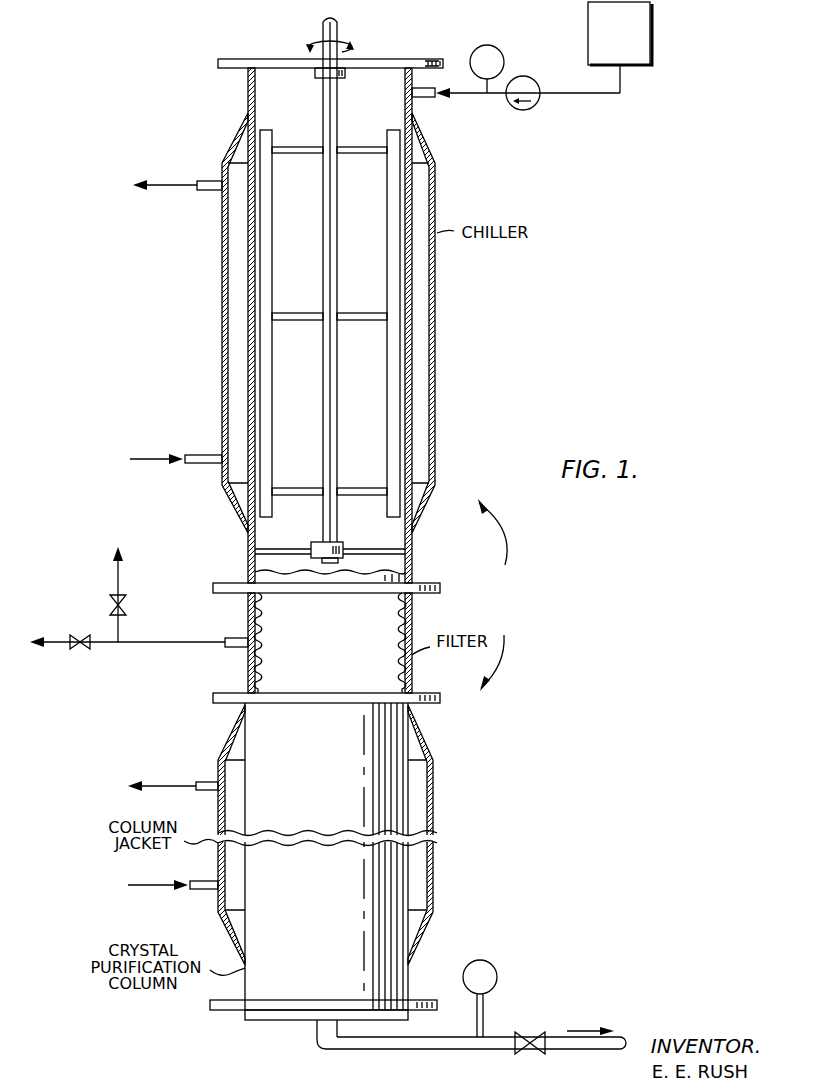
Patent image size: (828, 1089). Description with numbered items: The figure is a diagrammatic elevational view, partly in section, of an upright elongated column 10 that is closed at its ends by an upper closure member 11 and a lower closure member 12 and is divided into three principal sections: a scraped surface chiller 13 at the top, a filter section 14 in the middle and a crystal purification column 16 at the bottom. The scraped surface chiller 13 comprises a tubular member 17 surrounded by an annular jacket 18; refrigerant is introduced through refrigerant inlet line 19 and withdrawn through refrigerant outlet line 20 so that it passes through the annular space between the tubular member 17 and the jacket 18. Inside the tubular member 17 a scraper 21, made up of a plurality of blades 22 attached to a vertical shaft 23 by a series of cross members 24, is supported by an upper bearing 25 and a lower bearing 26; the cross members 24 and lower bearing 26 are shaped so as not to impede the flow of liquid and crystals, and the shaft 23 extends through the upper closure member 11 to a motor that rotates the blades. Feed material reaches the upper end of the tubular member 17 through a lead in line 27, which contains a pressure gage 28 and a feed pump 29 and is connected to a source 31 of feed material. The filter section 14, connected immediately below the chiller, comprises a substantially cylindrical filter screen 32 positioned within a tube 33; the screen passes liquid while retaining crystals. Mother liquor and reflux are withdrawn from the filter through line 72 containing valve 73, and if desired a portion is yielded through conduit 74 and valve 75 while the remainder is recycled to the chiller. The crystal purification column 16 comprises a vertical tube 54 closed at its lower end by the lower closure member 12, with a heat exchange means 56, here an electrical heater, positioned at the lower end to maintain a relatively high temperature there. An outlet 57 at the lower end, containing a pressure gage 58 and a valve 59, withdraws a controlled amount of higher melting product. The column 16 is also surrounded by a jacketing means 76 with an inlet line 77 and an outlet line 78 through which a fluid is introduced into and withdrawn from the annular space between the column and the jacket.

The upright elongated column 10 is at (496, 595).
The upper closure member 11 is at (269, 58).
The lower closure member 12 is at (222, 1012).
The scraped surface chiller 13 is at (208, 344).
The filter section 14 is at (428, 622).
The crystal purification column 16 is at (451, 886).
The tubular member 17 is at (412, 301).
The annular jacket 18 is at (436, 374).
The refrigerant inlet line 19 is at (152, 455).
The refrigerant outlet line 20 is at (162, 182).
The scraper 21 is at (285, 281).
The blades 22 is at (388, 265).
The vertical shaft 23 is at (325, 229).
The cross members 24 is at (359, 154).
The upper bearing 25 is at (345, 78).
The lower bearing 26 is at (317, 542).
The lead in line 27 is at (465, 95).
The pressure gage 28 is at (498, 49).
The feed pump 29 is at (534, 107).
The source of feed material 31 is at (628, 40).
The filter screen 32 is at (262, 640).
The tube 33 is at (247, 611).
The vertical tube 54 is at (407, 976).
The heat exchange means 56 is at (277, 1022).
The outlet 57 is at (388, 1050).
The pressure gage 58 is at (496, 968).
The valve 59 is at (535, 1031).
The line 72 is at (178, 647).
The valve 73 is at (80, 649).
The conduit 74 is at (120, 625).
The valve 75 is at (112, 600).
The jacketing means 76 is at (433, 796).
The inlet line 77 is at (155, 886).
The outlet line 78 is at (158, 785).